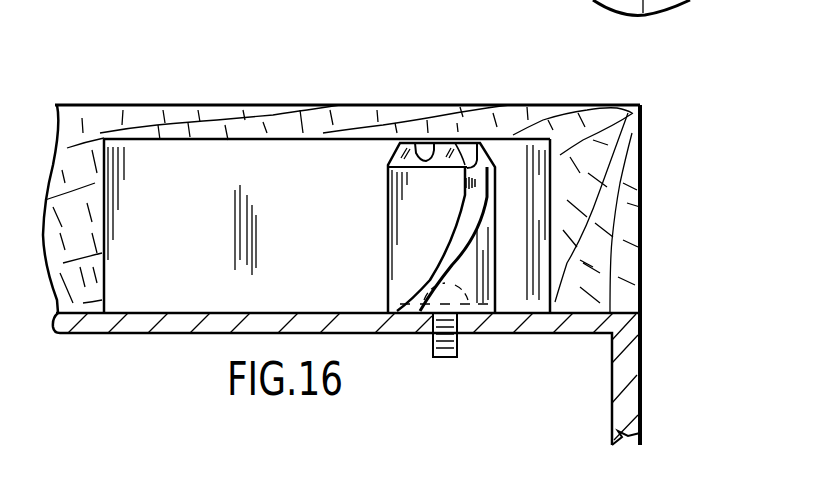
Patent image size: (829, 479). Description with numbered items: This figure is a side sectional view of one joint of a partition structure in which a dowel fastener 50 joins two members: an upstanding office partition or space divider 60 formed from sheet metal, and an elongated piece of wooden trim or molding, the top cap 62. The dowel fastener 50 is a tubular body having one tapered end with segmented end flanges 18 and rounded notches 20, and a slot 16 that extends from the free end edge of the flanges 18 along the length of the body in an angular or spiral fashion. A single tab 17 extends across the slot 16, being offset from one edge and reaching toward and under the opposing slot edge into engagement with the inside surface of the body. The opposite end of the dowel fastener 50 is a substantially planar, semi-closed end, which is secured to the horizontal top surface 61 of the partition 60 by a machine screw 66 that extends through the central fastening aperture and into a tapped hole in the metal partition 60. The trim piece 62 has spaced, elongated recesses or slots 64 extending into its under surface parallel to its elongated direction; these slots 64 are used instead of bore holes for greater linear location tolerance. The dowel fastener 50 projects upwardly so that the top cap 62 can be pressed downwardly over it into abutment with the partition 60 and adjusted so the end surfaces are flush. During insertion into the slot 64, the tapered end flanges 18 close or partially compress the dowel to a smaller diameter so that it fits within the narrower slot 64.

The slot 16 is at (443, 268).
The tab 17 is at (480, 182).
The segmented end flanges 18 is at (476, 140).
The rounded notches 20 is at (416, 145).
The dowel fastener 50 is at (388, 214).
The office partition 60 is at (630, 391).
The top surface 61 is at (173, 313).
The trim piece 62 is at (180, 107).
The elongated slots 64 is at (225, 143).
The machine screw 66 is at (457, 357).